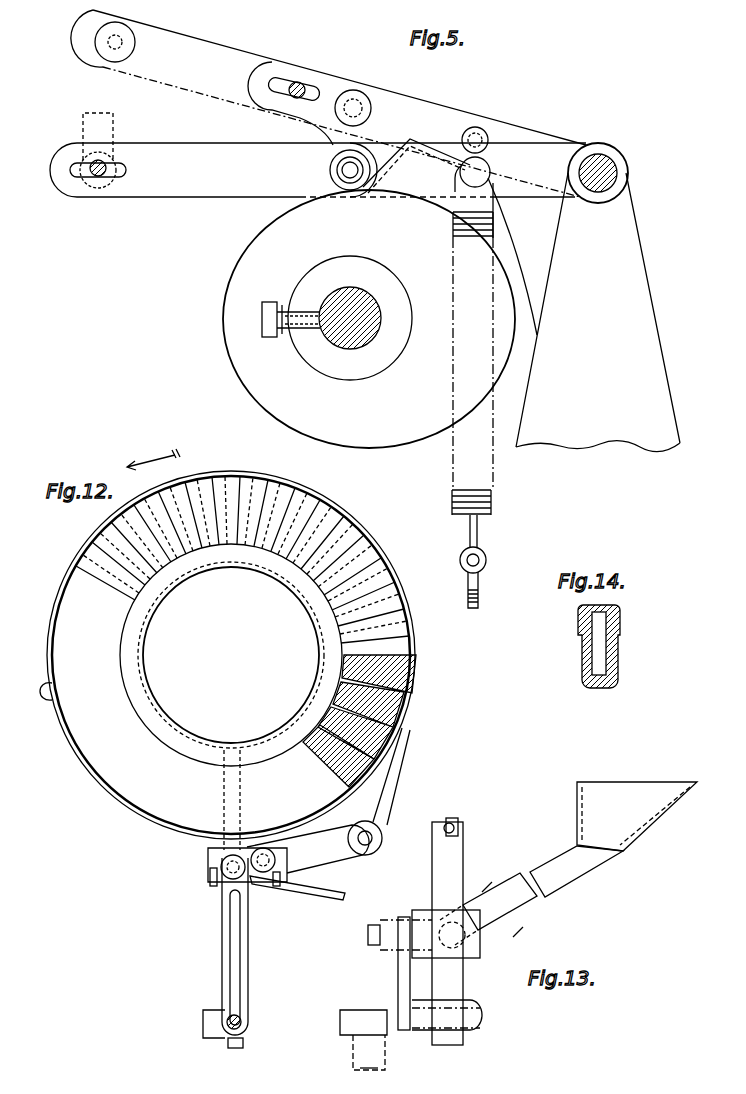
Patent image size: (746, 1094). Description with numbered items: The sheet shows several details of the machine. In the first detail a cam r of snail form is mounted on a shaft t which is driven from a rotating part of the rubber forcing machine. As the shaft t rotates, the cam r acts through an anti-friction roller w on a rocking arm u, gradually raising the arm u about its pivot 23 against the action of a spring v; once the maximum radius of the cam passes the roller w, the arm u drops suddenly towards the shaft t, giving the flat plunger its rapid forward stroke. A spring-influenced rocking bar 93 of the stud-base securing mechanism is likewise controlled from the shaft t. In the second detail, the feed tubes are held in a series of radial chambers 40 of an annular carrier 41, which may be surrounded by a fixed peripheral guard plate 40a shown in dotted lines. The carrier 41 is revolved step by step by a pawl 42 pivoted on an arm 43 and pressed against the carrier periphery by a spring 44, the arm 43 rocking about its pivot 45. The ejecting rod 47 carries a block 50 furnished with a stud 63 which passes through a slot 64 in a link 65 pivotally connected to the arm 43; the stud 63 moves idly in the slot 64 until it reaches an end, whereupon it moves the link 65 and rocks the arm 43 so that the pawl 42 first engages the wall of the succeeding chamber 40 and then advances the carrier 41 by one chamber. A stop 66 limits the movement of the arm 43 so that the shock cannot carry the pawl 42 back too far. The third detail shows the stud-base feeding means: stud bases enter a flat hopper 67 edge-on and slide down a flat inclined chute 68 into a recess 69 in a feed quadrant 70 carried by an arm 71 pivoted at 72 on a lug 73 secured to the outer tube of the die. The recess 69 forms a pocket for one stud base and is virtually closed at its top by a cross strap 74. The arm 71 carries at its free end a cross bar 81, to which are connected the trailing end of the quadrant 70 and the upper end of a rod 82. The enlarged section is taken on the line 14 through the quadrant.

In FIG. 5, the rocking arm u is at (153, 190).
In FIG. 5, the anti-friction roller w is at (330, 168).
In FIG. 5, the spring v is at (494, 220).
In FIG. 5, the shaft t is at (352, 336).
In FIG. 5, the cam r is at (375, 440).
In FIG. 5, the rocking bar 93 is at (432, 106).
In FIG. 5, the pivot 23 is at (602, 165).
In FIG. 12, the radial chambers 40 is at (385, 727).
In FIG. 12, the fixed peripheral guard plate 40a is at (145, 830).
In FIG. 12, the annular carrier 41 is at (105, 553).
In FIG. 12, the pawl 42 is at (392, 771).
In FIG. 12, the arm 43 is at (330, 850).
In FIG. 12, the spring 44 is at (383, 811).
In FIG. 12, the pivot 45 is at (266, 876).
In FIG. 12, the rod 47 is at (243, 1043).
In FIG. 12, the block 50 is at (208, 1032).
In FIG. 12, the stud 63 is at (241, 1021).
In FIG. 12, the slot 64 is at (237, 948).
In FIG. 12, the link 65 is at (246, 970).
In FIG. 12, the stop 66 is at (336, 900).
In FIG. 14, the stop 66 is at (596, 688).
In FIG. 13, the flat hopper 67 is at (595, 805).
In FIG. 13, the flat inclined chute 68 is at (540, 900).
In FIG. 13, the recess 69 is at (458, 827).
In FIG. 13, the feed quadrant 70 is at (446, 850).
In FIG. 13, the arm 71 is at (398, 978).
In FIG. 13, the pivot 72 is at (372, 940).
In FIG. 13, the lug 73 is at (426, 910).
In FIG. 13, the cross strap 74 is at (456, 820).
In FIG. 13, the cross bar 81 is at (342, 1014).
In FIG. 13, the rod 82 is at (360, 1072).
In FIG. 13, the section line 14 is at (487, 887).